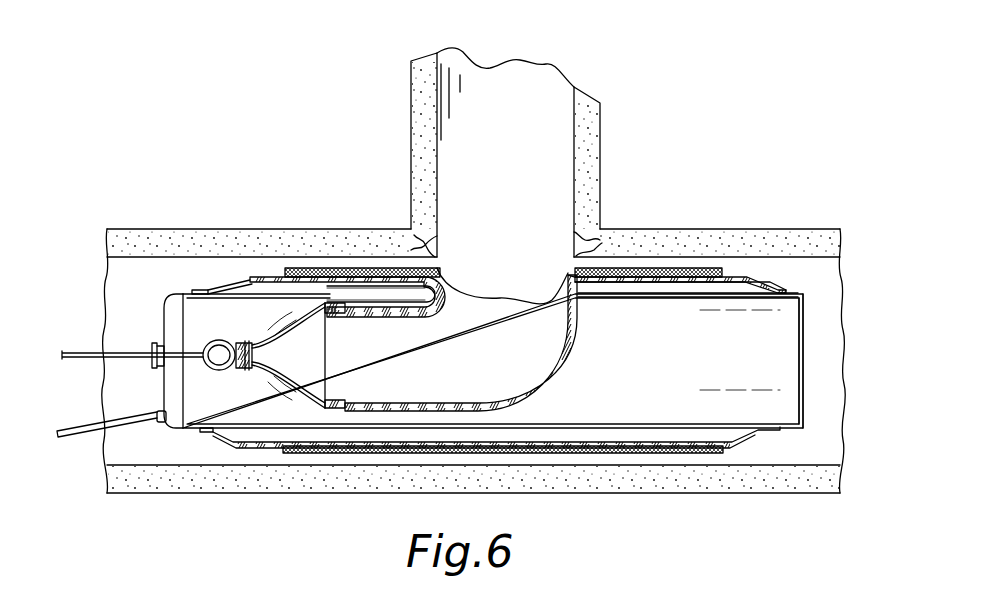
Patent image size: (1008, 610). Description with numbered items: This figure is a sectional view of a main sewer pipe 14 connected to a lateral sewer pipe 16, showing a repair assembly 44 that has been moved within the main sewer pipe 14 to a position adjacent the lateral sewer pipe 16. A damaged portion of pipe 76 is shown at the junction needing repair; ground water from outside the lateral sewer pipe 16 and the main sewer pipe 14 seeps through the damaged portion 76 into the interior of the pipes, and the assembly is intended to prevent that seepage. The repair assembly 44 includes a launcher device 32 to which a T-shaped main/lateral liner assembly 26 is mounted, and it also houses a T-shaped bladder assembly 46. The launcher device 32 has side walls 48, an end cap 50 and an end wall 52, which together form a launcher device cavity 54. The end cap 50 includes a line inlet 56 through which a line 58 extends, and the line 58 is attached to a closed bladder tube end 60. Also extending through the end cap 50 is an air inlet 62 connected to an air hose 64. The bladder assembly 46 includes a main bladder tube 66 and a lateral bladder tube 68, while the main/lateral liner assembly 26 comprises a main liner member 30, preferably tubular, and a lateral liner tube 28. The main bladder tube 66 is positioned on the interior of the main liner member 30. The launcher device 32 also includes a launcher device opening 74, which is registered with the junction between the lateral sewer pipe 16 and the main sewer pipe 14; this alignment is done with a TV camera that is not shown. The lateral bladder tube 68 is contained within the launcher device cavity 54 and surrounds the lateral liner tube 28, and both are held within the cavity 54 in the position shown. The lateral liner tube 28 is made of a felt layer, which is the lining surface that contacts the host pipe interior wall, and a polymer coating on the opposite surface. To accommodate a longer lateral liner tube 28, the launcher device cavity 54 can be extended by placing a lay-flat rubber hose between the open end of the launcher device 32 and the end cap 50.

The main sewer pipe 14 is at (757, 228).
The lateral sewer pipe 16 is at (600, 167).
The main/lateral liner assembly 26 is at (655, 265).
The lateral liner tube 28 is at (408, 317).
The main liner member 30 is at (373, 268).
The launcher device 32 is at (164, 296).
The repair assembly 44 is at (123, 302).
The bladder assembly 46 is at (572, 340).
The side walls 48 is at (248, 296).
The end cap 50 is at (171, 388).
The end wall 52 is at (800, 322).
The launcher device cavity 54 is at (772, 385).
The line inlet 56 is at (150, 346).
The line 58 is at (112, 361).
The closed bladder tube end 60 is at (232, 340).
The air inlet 62 is at (163, 422).
The air hose 64 is at (98, 440).
The main bladder tube 66 is at (240, 283).
The lateral bladder tube 68 is at (290, 323).
The launcher device opening 74 is at (580, 298).
The damaged portion of pipe 76 is at (425, 240).